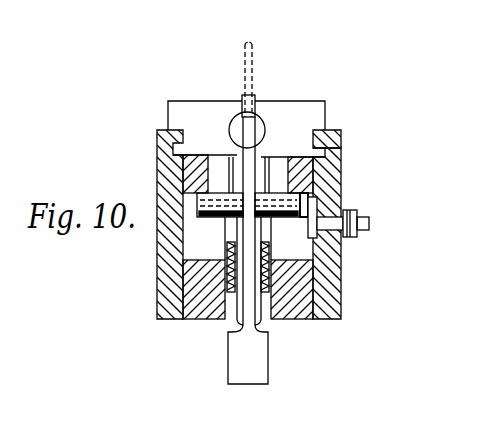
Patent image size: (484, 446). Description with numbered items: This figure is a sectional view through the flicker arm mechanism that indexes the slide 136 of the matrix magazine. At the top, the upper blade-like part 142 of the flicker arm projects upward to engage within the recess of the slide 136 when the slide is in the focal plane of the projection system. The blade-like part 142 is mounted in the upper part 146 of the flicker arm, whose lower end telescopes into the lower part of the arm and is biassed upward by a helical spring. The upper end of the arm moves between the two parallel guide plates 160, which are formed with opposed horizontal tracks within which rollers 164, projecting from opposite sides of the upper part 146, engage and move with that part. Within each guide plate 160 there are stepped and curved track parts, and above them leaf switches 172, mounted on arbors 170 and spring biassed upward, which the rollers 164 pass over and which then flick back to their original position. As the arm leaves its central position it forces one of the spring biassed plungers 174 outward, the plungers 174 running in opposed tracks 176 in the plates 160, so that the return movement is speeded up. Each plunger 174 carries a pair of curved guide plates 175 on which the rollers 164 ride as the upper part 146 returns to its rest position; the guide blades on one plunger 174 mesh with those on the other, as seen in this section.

The slide 136 is at (253, 46).
The blade-like part 142 is at (241, 103).
The spring biassed plunger 174 is at (299, 113).
The track 176 is at (342, 146).
The guide plate 160 is at (170, 268).
The leaf switch 172 is at (318, 206).
The arbor 170 is at (323, 247).
The roller 164 is at (243, 221).
The curved guide plate 175 is at (227, 250).
The upper part of flicker arm 146 is at (241, 314).